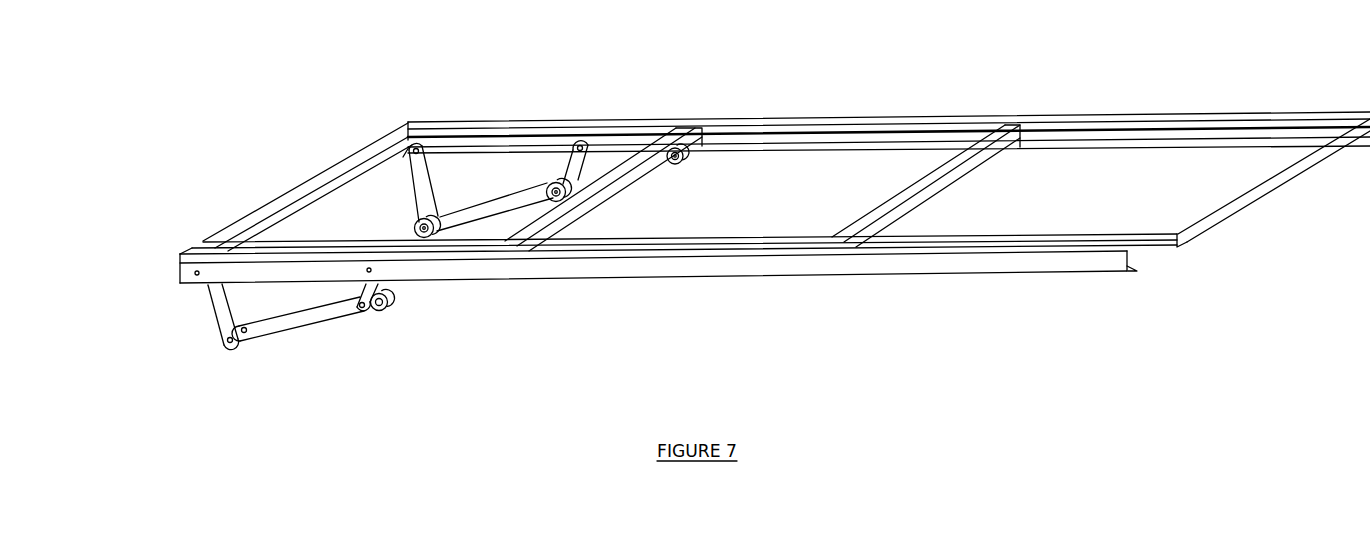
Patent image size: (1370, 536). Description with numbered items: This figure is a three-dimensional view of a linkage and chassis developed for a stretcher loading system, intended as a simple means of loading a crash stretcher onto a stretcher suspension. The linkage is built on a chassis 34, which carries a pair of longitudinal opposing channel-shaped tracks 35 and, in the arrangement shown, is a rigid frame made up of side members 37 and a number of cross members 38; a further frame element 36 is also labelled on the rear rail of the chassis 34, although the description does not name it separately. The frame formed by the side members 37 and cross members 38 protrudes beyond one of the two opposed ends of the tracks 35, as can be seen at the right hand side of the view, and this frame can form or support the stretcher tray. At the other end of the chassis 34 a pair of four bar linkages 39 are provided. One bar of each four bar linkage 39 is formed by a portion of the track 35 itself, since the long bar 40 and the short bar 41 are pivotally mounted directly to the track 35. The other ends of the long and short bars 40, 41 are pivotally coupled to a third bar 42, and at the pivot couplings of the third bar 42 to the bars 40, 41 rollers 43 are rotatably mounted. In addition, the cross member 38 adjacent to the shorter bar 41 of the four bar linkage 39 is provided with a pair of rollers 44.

The chassis 34 is at (978, 282).
The channel-shaped track 35 is at (1113, 263).
The rear rail 36 is at (1080, 135).
The side member 37 is at (1150, 118).
The cross member 38 is at (263, 207).
The four bar linkage 39 is at (358, 241).
The long bar 40 is at (413, 157).
The short bar 41 is at (573, 163).
The third bar 42 is at (477, 207).
The roller 43 is at (420, 223).
The roller 44 is at (717, 133).